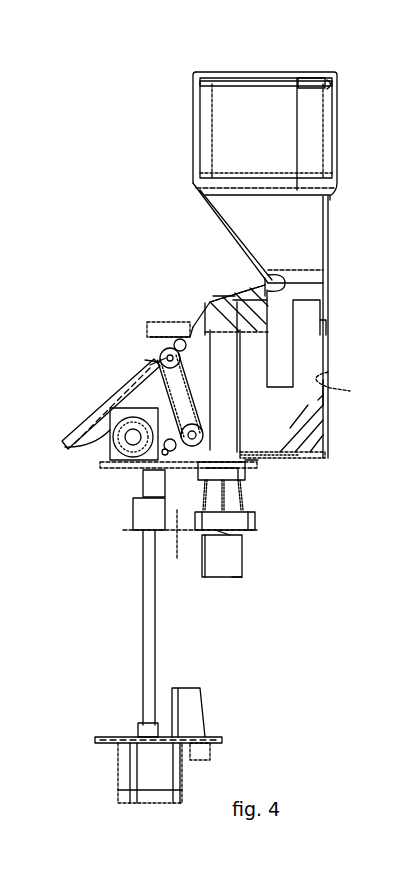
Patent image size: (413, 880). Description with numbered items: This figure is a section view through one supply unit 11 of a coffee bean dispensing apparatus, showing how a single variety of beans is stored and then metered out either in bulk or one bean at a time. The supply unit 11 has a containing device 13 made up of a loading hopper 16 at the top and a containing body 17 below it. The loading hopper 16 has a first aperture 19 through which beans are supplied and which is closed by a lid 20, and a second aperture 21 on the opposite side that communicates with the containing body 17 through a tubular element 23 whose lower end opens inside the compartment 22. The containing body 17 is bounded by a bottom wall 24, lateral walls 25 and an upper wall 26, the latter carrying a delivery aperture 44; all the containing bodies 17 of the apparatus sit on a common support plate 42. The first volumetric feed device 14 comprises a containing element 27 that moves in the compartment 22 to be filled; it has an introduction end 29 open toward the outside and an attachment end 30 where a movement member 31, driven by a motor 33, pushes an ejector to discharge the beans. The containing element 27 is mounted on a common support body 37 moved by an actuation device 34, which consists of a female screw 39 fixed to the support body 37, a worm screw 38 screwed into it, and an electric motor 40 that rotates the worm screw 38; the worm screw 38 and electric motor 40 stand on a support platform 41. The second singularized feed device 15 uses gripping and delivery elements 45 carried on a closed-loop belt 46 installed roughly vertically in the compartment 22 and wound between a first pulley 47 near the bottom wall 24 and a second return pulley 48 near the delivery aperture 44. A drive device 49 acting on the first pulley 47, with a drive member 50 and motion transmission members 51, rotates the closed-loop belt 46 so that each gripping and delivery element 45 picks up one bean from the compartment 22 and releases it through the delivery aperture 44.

The supply unit 11 is at (191, 46).
The containing device 13 is at (345, 250).
The first volumetric feed device 14 is at (248, 483).
The second singularized feed device 15 is at (147, 361).
The loading hopper 16 is at (330, 133).
The containing body 17 is at (331, 360).
The first aperture 19 is at (318, 80).
The lid 20 is at (280, 73).
The second aperture 21 is at (268, 285).
The compartment 22 is at (346, 385).
The tubular element 23 is at (288, 332).
The bottom wall 24 is at (268, 452).
The lateral walls 25 is at (328, 397).
The upper wall 26 is at (235, 295).
The containing element 27 is at (218, 338).
The introduction end 29 is at (212, 300).
The attachment end 30 is at (232, 500).
The movement member 31 is at (233, 577).
The motor 33 is at (232, 556).
The actuation device 34 is at (89, 740).
The support body 37 is at (177, 531).
The worm screw 38 is at (153, 672).
The female screw 39 is at (127, 524).
The electric motor 40 is at (125, 782).
The support platform 41 is at (210, 736).
The support plate 42 is at (98, 464).
The delivery aperture 44 is at (155, 332).
The gripping and delivery element 45 is at (150, 363).
The closed-loop belt 46 is at (195, 412).
The first pulley 47 is at (252, 463).
The second return pulley 48 is at (166, 356).
The drive device 49 is at (112, 397).
The drive member 50 is at (78, 448).
The motion transmission members 51 is at (170, 450).